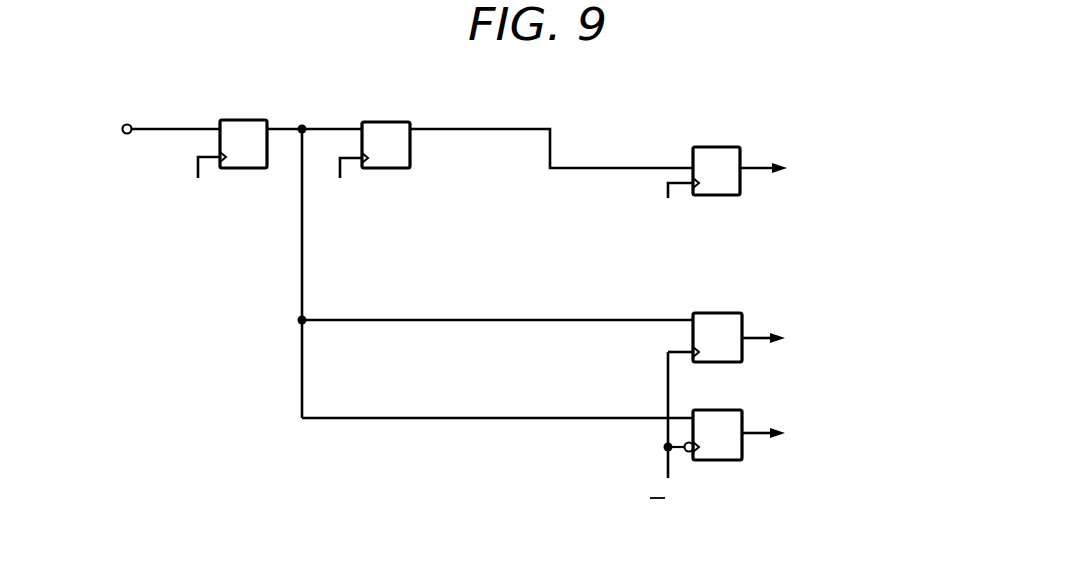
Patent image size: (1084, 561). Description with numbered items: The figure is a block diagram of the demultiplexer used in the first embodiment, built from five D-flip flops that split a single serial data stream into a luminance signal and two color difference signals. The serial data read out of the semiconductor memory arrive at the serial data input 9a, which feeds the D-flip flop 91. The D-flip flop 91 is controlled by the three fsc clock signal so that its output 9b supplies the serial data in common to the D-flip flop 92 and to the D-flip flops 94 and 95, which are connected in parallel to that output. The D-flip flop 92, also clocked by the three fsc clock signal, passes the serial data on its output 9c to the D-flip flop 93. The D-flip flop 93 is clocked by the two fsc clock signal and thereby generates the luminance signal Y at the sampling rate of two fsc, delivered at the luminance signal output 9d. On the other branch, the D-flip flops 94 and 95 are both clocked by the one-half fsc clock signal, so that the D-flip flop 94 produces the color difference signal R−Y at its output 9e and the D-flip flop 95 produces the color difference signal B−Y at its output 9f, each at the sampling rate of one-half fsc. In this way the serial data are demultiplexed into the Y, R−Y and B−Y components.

The serial data input 9a is at (182, 126).
The D-flip flop 91 is at (252, 119).
The output of D-flip flop 91 9b is at (304, 126).
The D-flip flop 92 is at (390, 121).
The output of D-flip flop 92 9c is at (469, 128).
The D-flip flop 93 is at (718, 146).
The luminance signal output 9d is at (762, 167).
The D-flip flop 94 is at (717, 312).
The color difference signal R−Y output 9e is at (760, 337).
The D-flip flop 95 is at (725, 410).
The color difference signal B−Y output 9f is at (762, 432).